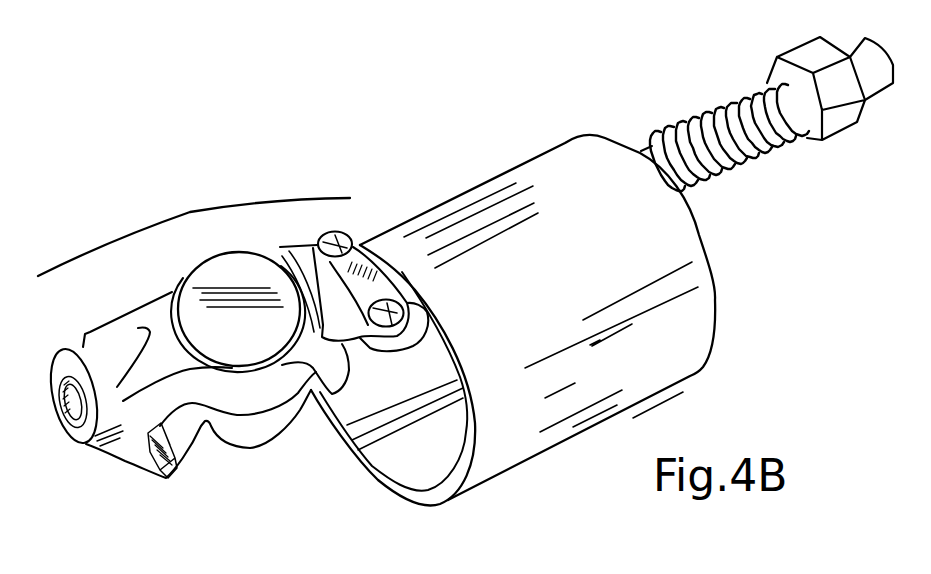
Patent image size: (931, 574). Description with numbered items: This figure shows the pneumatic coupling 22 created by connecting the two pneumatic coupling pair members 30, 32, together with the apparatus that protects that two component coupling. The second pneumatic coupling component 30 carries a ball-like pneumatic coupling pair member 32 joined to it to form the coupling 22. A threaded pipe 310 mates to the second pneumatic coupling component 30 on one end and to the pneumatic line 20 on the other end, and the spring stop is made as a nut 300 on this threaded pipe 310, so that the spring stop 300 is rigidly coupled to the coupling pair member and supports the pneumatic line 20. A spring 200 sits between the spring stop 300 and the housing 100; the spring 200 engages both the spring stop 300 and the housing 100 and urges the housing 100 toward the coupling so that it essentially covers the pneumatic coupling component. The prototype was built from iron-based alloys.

The pneumatic line 20 is at (848, 50).
The pneumatic coupling 22 is at (190, 212).
The second pneumatic coupling component 30 is at (260, 450).
The pneumatic coupling pair member 32 is at (209, 258).
The housing 100 is at (425, 208).
The spring 200 is at (707, 118).
The spring stop 300 is at (782, 54).
The threaded pipe 310 is at (640, 152).